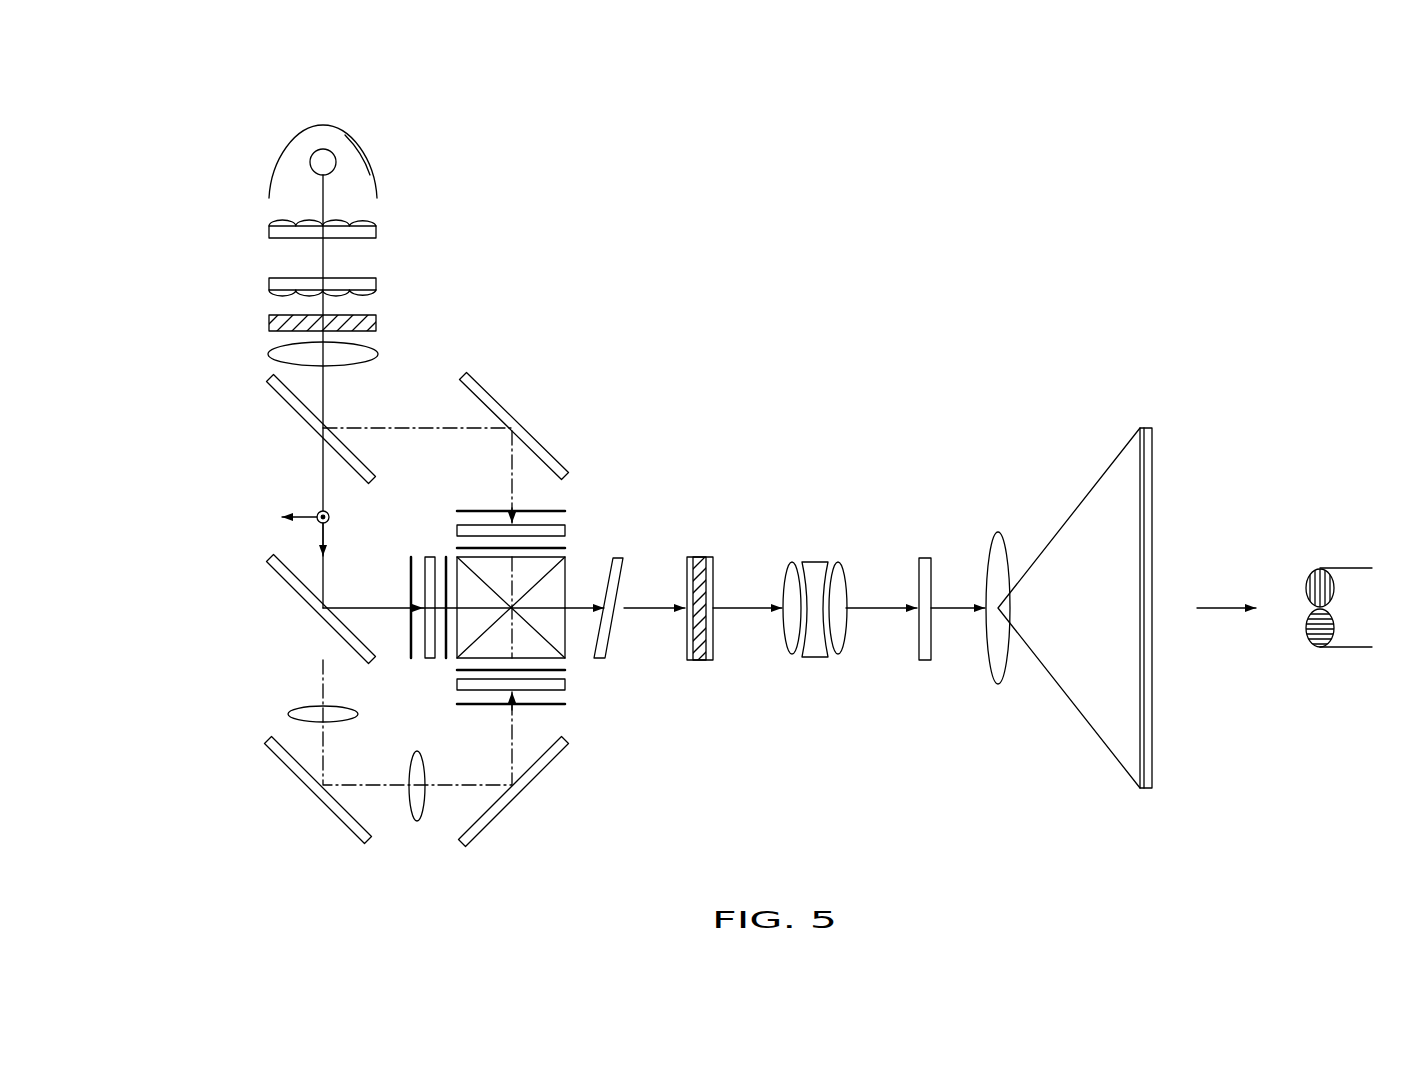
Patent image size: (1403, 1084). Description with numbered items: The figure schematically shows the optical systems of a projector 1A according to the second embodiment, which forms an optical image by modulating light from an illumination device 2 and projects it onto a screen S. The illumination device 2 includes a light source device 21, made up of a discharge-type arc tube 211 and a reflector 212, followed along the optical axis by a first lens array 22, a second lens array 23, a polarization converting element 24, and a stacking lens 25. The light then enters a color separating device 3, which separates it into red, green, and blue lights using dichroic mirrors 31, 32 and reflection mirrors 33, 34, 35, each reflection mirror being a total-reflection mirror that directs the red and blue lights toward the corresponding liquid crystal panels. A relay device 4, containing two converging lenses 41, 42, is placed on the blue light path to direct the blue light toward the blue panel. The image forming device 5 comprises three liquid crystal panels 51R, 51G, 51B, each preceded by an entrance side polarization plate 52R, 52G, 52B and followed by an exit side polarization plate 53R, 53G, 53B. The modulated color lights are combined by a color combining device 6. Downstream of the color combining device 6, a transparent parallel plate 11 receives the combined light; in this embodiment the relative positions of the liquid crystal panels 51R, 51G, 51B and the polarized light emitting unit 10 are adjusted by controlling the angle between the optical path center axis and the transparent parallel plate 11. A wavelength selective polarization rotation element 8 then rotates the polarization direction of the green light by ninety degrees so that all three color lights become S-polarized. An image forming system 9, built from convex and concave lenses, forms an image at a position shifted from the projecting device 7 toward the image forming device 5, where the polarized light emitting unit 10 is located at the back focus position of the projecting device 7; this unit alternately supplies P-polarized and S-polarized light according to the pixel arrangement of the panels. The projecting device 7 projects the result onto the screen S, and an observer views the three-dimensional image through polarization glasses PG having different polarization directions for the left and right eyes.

The projector 1A is at (832, 208).
The illumination device 2 is at (440, 186).
The light source device 21 is at (283, 147).
The discharge-type arc tube 211 is at (320, 150).
The reflector 212 is at (360, 148).
The first lens array 22 is at (268, 229).
The second lens array 23 is at (268, 283).
The polarization converting element 24 is at (268, 323).
The stacking lens 25 is at (268, 353).
The color separating device 3 is at (205, 541).
The dichroic mirror 31 is at (272, 397).
The dichroic mirror 32 is at (275, 578).
The reflection mirror 33 is at (277, 757).
The reflection mirror 34 is at (502, 402).
The reflection mirror 35 is at (540, 775).
The relay device 4 is at (415, 850).
The converging lens 41 is at (290, 711).
The converging lens 42 is at (420, 755).
The image forming device 5 is at (637, 763).
The liquid crystal panel 51G is at (430, 557).
The entrance side polarization plate 52G is at (409, 572).
The exit side polarization plate 53G is at (446, 658).
The liquid crystal panel 51R is at (563, 528).
The entrance side polarization plate 52R is at (563, 511).
The exit side polarization plate 53R is at (565, 548).
The liquid crystal panel 51B is at (565, 686).
The entrance side polarization plate 52B is at (565, 705).
The exit side polarization plate 53B is at (565, 670).
The color combining device 6 is at (566, 560).
The transparent parallel plate 11 is at (624, 580).
The wavelength selective polarization rotation element 8 is at (700, 661).
The image forming system 9 is at (813, 562).
The polarized light emitting unit 10 is at (925, 558).
The projecting device 7 is at (1002, 532).
The screen S is at (1155, 483).
The polarization glasses PG is at (1318, 567).